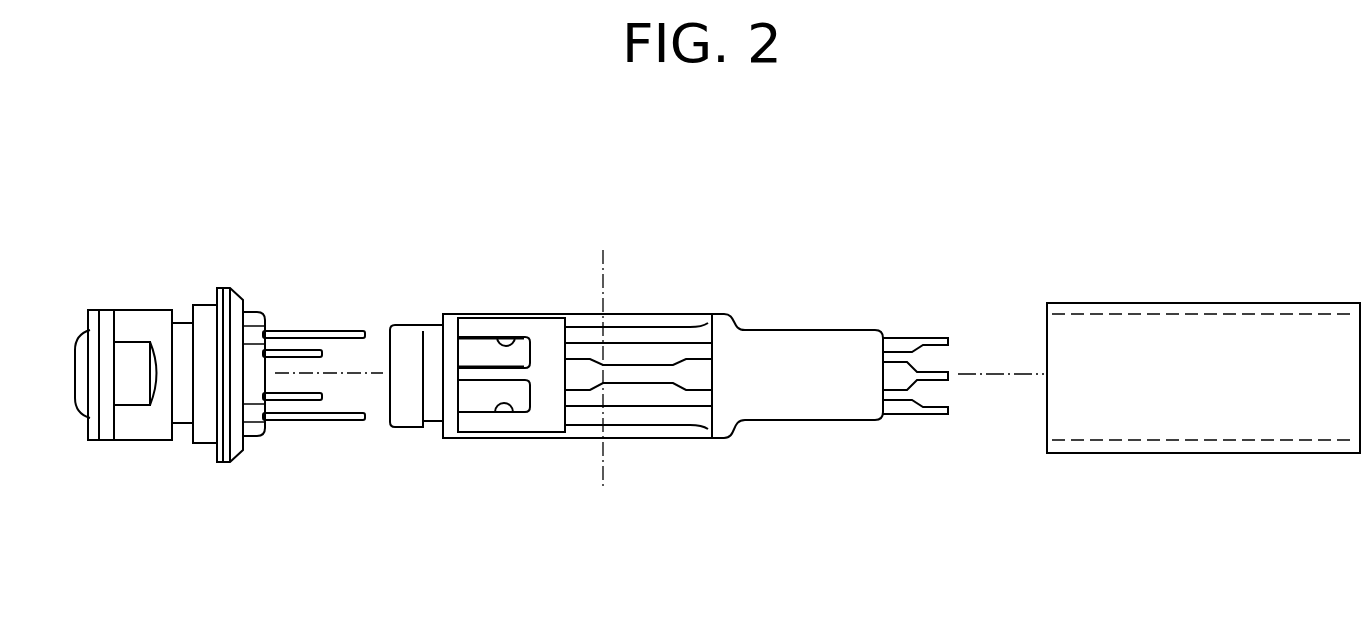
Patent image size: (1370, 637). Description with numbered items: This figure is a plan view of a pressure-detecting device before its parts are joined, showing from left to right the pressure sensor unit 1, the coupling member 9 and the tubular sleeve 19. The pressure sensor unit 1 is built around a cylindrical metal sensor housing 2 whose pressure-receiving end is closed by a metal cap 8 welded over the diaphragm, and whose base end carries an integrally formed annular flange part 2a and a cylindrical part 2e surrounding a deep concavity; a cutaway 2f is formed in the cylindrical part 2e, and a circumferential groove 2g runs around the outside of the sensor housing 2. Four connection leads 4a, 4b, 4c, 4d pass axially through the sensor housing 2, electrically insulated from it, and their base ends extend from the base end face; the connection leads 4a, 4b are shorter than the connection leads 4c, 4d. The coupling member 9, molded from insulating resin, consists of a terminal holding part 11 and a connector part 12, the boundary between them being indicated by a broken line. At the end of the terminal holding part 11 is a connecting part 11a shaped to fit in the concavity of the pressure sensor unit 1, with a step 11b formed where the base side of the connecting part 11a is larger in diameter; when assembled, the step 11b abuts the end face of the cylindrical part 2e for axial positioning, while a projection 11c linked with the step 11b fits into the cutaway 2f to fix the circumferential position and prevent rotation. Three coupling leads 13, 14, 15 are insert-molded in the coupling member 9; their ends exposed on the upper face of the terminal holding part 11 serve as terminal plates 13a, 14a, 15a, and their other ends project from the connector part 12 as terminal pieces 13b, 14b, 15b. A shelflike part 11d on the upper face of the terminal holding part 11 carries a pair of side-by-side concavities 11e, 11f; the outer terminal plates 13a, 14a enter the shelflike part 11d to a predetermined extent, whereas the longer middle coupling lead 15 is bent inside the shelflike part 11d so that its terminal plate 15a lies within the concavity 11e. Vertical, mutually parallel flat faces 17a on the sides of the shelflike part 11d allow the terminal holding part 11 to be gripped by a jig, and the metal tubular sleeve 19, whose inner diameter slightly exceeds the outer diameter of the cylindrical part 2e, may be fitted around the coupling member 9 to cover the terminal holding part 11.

The pressure sensor unit 1 is at (197, 284).
The sensor housing 2 is at (135, 318).
The annular flange part 2a is at (222, 464).
The cylindrical part 2e is at (255, 437).
The cutaway 2f is at (258, 336).
The circumferential groove 2g is at (192, 434).
The connection lead 4a is at (306, 357).
The connection lead 4b is at (302, 387).
The connection lead 4c is at (336, 330).
The connection lead 4d is at (336, 421).
The cap 8 is at (80, 346).
The coupling member 9 is at (646, 250).
The terminal holding part 11 is at (509, 317).
The connecting part 11a is at (405, 421).
The step 11b is at (432, 313).
The projection 11c is at (434, 412).
The shelflike part 11d is at (543, 421).
The concavity 11e is at (520, 339).
The concavity 11f is at (500, 404).
The connector part 12 is at (758, 331).
The coupling lead 13 is at (690, 325).
The terminal plate 13a is at (581, 327).
The terminal piece 13b is at (935, 338).
The coupling lead 14 is at (677, 428).
The terminal plate 14a is at (583, 419).
The terminal piece 14b is at (935, 416).
The coupling lead 15 is at (643, 363).
The terminal plate 15a is at (477, 338).
The terminal piece 15b is at (940, 373).
The flat faces 17a is at (514, 317).
The tubular sleeve 19 is at (1233, 302).